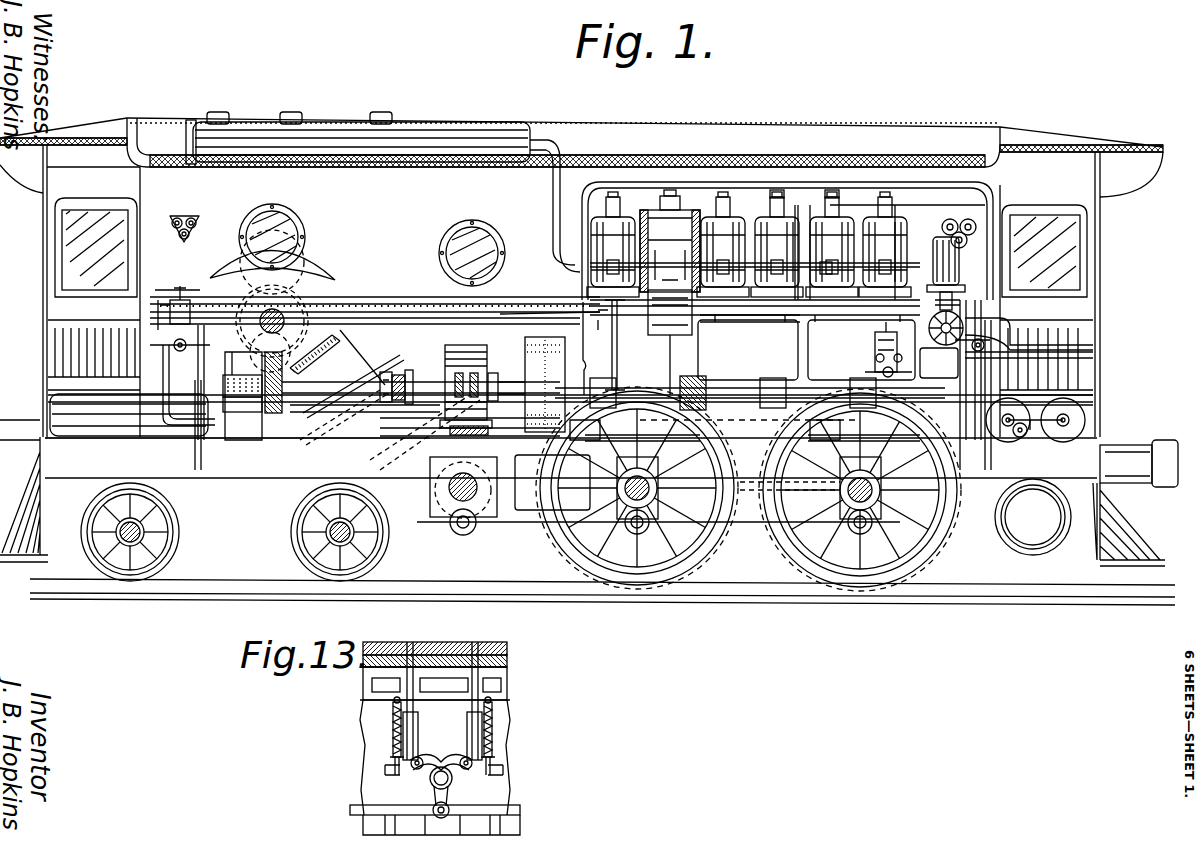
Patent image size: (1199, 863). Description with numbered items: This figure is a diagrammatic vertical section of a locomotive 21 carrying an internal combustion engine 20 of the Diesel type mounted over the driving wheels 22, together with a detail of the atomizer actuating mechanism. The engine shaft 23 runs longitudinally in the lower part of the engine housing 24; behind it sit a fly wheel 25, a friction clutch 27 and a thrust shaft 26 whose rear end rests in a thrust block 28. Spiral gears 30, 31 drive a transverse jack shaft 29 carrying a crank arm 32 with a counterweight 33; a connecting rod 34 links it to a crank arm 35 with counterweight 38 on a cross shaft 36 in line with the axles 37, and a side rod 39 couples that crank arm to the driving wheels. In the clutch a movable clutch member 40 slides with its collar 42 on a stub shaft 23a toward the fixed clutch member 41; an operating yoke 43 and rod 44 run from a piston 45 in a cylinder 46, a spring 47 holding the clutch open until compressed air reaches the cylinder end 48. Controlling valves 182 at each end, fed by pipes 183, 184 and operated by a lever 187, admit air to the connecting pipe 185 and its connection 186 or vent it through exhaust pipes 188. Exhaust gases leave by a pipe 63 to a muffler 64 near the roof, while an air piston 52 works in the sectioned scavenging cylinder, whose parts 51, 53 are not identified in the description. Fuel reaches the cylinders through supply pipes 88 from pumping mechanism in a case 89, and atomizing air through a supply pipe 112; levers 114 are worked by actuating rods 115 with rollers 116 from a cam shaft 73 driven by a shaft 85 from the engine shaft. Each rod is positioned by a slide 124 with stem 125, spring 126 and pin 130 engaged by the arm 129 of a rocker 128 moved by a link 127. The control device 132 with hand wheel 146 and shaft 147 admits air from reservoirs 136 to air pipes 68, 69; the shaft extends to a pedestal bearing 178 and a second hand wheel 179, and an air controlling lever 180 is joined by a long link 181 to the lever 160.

In FIG. 1, the locomotive 21 is at (589, 327).
In FIG. 1, the muffler 64 is at (430, 140).
In FIG. 1, the pipe 63 is at (556, 187).
In FIG. 1, the supply pipe 112 is at (875, 185).
In FIG. 1, the engine 20 is at (753, 249).
In FIG. 1, the cylinder 51 is at (660, 230).
In FIG. 1, the air piston 52 is at (668, 325).
In FIG. 1, the connecting rod 53 is at (612, 350).
In FIG. 1, the engine shaft 23 is at (700, 382).
In FIG. 1, the shaft of the hand wheel 147 is at (445, 245).
In FIG. 1, the air pipe 69 is at (795, 318).
In FIG. 1, the air pipe 68 is at (812, 342).
In FIG. 1, the slide 124 is at (876, 343).
In FIG. 13, the slide 124 is at (472, 726).
In FIG. 1, the arm 129 is at (876, 358).
In FIG. 13, the arm 129 is at (472, 765).
In FIG. 1, the link 127 is at (880, 367).
In FIG. 13, the link 127 is at (505, 808).
In FIG. 1, the shaft 85 is at (939, 363).
In FIG. 1, the actuating rod 115 is at (785, 195).
In FIG. 1, the lever 114 is at (840, 225).
In FIG. 1, the roller 116 is at (834, 270).
In FIG. 1, the lever 160 is at (933, 245).
In FIG. 1, the supply pipe 88 is at (975, 215).
In FIG. 1, the cam shaft 73 is at (915, 262).
In FIG. 1, the control device 132 is at (960, 312).
In FIG. 1, the hand wheel 146 is at (1015, 318).
In FIG. 1, the lever 187 is at (1030, 335).
In FIG. 1, the case 89 is at (1060, 345).
In FIG. 1, the controlling valve 182 is at (990, 347).
In FIG. 1, the pipe 183 is at (1095, 397).
In FIG. 1, the reservoir 136 is at (1068, 440).
In FIG. 1, the exhaust pipe 188 is at (975, 460).
In FIG. 1, the pipe 184 is at (200, 420).
In FIG. 1, the spiral gear 31 is at (243, 395).
In FIG. 1, the thrust block 28 is at (243, 398).
In FIG. 1, the spiral gear 30 is at (278, 415).
In FIG. 1, the jack shaft 29 is at (283, 310).
In FIG. 1, the counterweight 33 is at (235, 265).
In FIG. 1, the hand wheel 179 is at (160, 290).
In FIG. 1, the pedestal bearing 178 is at (183, 298).
In FIG. 1, the air controlling lever 180 is at (180, 286).
In FIG. 1, the long link 181 is at (360, 297).
In FIG. 1, the friction clutch 27 is at (392, 318).
In FIG. 1, the engine housing 24 is at (570, 318).
In FIG. 1, the crank arm 32 is at (332, 336).
In FIG. 1, the thrust shaft 26 is at (360, 380).
In FIG. 1, the connecting pipe 185 is at (340, 400).
In FIG. 1, the spring 47 is at (380, 387).
In FIG. 1, the cylinder 46 is at (365, 410).
In FIG. 1, the cylinder end 48 is at (430, 462).
In FIG. 1, the connecting rod 34 is at (420, 448).
In FIG. 1, the piston 45 is at (388, 375).
In FIG. 1, the rod 44 is at (412, 380).
In FIG. 1, the fixed clutch member 41 is at (452, 355).
In FIG. 1, the movable clutch member 40 is at (466, 372).
In FIG. 1, the collar 42 is at (480, 372).
In FIG. 1, the stub shaft 23a is at (510, 382).
In FIG. 1, the operating yoke 43 is at (495, 390).
In FIG. 1, the fly wheel 25 is at (545, 345).
In FIG. 1, the connection 186 is at (468, 436).
In FIG. 1, the cross shaft 36 is at (460, 518).
In FIG. 1, the crank arm 35 is at (475, 528).
In FIG. 1, the counterweight 38 is at (505, 457).
In FIG. 1, the axle 37 is at (625, 492).
In FIG. 1, the driving wheel 22 is at (685, 565).
In FIG. 1, the side rod 39 is at (760, 518).
In FIG. 13, the stem 125 is at (410, 642).
In FIG. 13, the spring 126 is at (393, 718).
In FIG. 13, the rocker 128 is at (441, 762).
In FIG. 13, the pin 130 is at (388, 768).